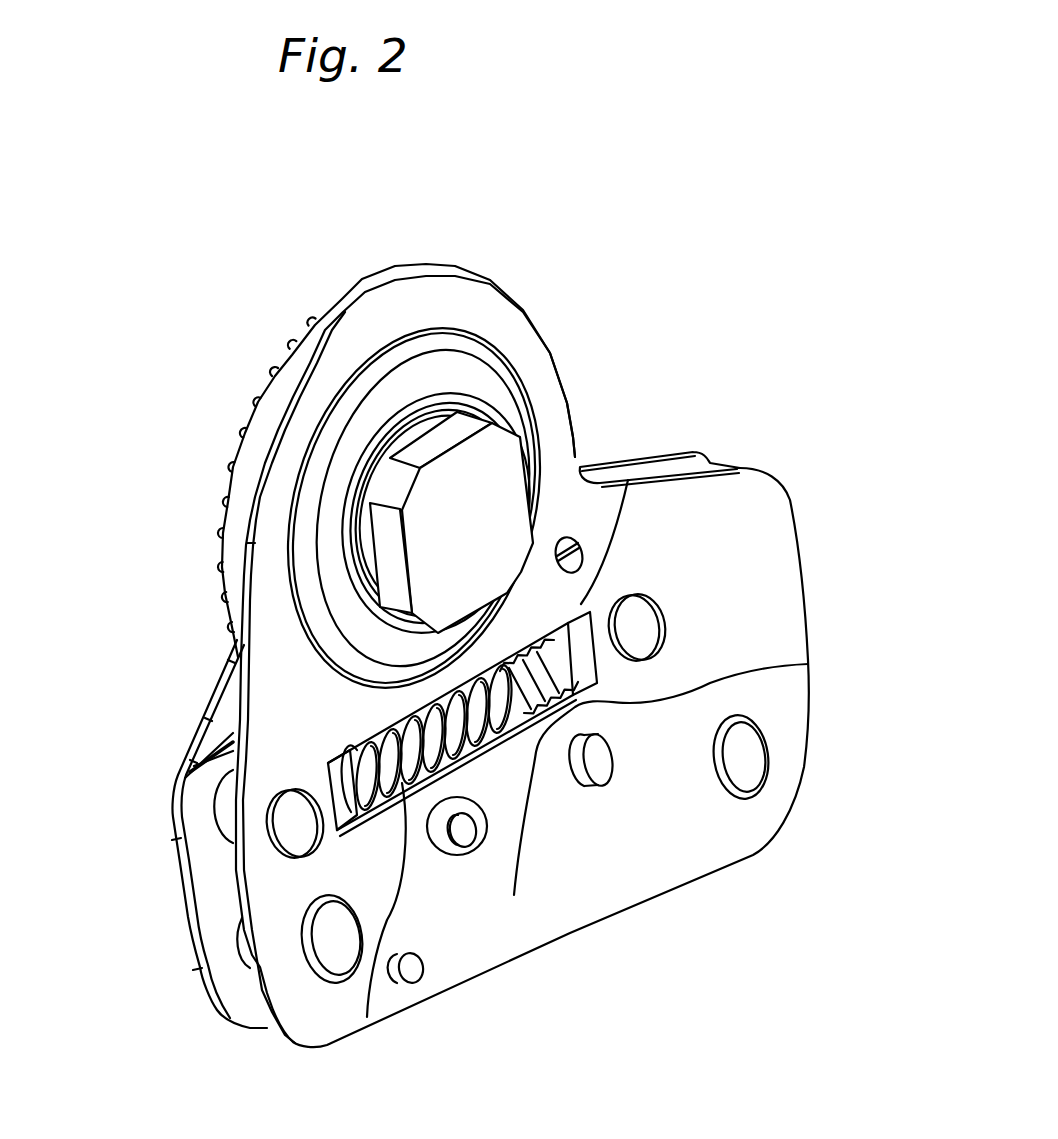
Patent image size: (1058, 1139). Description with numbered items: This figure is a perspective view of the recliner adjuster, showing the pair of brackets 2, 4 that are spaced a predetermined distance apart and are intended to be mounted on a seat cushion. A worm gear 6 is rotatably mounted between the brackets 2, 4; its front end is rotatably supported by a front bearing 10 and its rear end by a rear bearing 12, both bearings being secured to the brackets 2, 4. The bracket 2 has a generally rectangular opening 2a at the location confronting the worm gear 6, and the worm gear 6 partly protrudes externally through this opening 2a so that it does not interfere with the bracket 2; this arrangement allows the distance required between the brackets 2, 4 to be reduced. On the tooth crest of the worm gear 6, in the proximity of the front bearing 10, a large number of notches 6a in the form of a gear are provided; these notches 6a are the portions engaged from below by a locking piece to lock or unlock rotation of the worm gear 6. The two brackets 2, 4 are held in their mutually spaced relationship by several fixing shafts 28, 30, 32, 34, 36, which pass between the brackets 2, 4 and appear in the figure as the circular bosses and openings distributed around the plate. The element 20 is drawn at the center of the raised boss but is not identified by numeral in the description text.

The bracket 2 is at (755, 592).
The opening 2a is at (514, 895).
The bracket 4 is at (213, 883).
The worm gear 6 is at (367, 1017).
The notches 6a is at (808, 664).
The front bearing 10 is at (579, 632).
The rear bearing 12 is at (338, 766).
The hexagonal nut 20 is at (463, 508).
The fixing shaft 28 is at (342, 947).
The fixing shaft 30 is at (300, 822).
The fixing shaft 32 is at (742, 760).
The fixing shaft 34 is at (647, 622).
The fixing shaft 36 is at (458, 842).